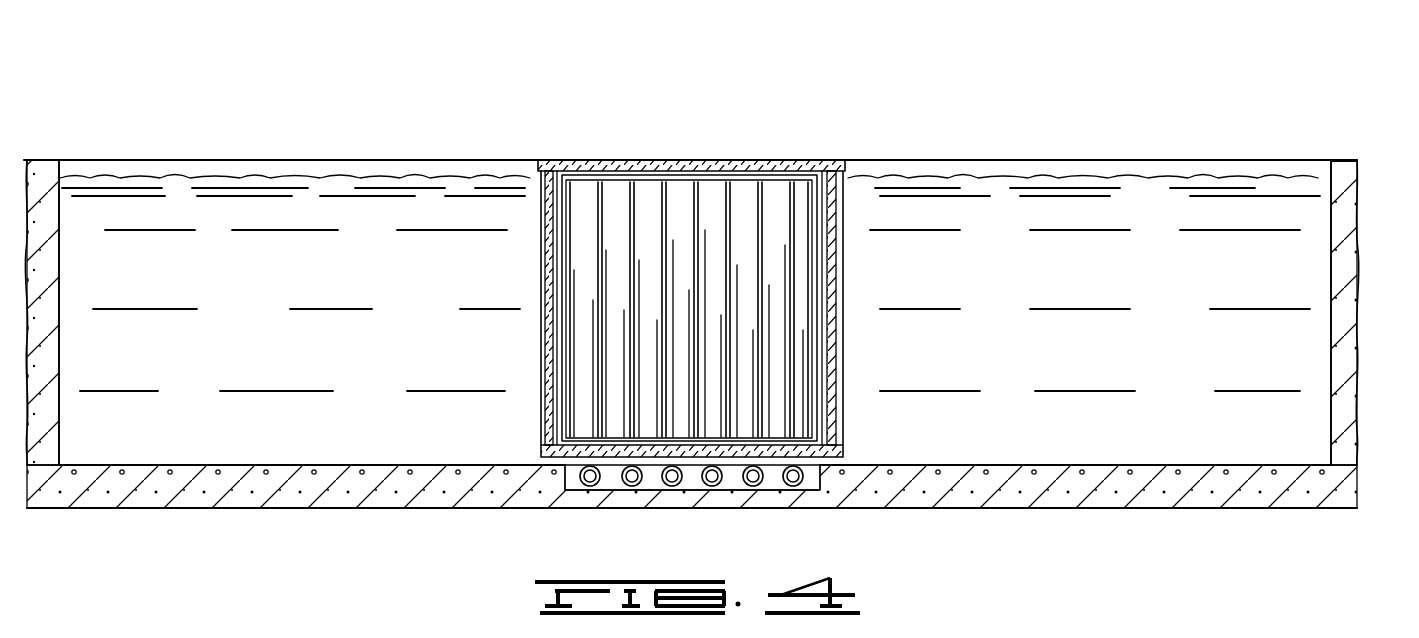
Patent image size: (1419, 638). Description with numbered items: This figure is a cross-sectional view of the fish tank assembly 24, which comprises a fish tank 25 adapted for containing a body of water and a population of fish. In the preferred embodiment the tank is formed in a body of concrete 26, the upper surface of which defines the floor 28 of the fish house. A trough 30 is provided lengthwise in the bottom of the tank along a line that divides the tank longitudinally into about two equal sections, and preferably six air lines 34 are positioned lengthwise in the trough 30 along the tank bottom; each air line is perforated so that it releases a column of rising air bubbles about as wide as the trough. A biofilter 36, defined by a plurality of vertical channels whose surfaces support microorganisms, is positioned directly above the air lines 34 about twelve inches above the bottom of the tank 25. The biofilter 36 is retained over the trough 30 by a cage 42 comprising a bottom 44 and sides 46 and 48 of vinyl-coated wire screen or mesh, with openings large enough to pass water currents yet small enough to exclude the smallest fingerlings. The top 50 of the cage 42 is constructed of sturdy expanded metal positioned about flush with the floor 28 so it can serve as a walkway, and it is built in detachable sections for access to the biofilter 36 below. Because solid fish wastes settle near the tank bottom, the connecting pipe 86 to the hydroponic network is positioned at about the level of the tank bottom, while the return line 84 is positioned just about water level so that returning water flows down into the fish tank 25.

The fish tank assembly 24 is at (990, 112).
The fish tank 25 is at (59, 223).
The body of concrete 26 is at (1358, 230).
The floor 28 is at (1340, 160).
The trough 30 is at (818, 490).
The air lines 34 is at (752, 488).
The biofilter 36 is at (738, 205).
The cage 42 is at (686, 160).
The bottom 44 is at (565, 455).
The side 46 is at (546, 205).
The side 48 is at (836, 195).
The top 50 is at (590, 172).
The return line 84 is at (44, 162).
The connecting pipe 86 is at (45, 505).